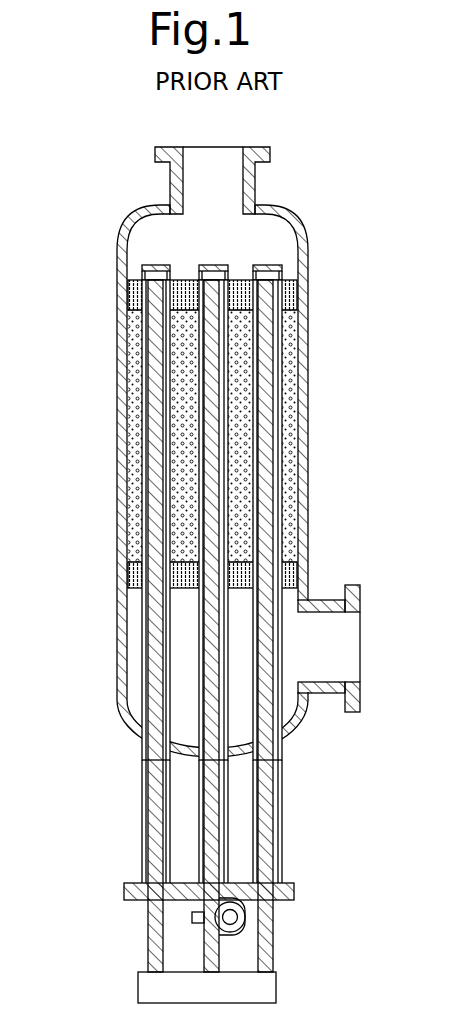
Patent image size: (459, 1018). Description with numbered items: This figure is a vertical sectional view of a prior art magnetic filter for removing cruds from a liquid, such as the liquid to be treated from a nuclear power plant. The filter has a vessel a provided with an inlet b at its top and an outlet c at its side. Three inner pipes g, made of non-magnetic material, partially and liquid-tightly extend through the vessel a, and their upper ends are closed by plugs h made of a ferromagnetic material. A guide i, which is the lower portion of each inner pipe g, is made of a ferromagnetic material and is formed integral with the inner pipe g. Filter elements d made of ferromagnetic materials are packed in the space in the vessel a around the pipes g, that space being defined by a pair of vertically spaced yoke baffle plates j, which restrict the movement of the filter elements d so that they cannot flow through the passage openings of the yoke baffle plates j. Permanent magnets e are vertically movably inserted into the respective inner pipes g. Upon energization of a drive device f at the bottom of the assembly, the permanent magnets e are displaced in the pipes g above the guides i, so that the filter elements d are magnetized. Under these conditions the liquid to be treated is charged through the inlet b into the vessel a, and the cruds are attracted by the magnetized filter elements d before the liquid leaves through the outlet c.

The vessel a is at (298, 226).
The inlet b is at (180, 147).
The outlet c is at (360, 692).
The filter elements d is at (287, 322).
The permanent magnets e is at (152, 387).
The drive device f is at (247, 922).
The inner pipes g is at (273, 392).
The plugs h is at (214, 265).
The guide i is at (140, 778).
The yoke baffle plates j is at (182, 278).